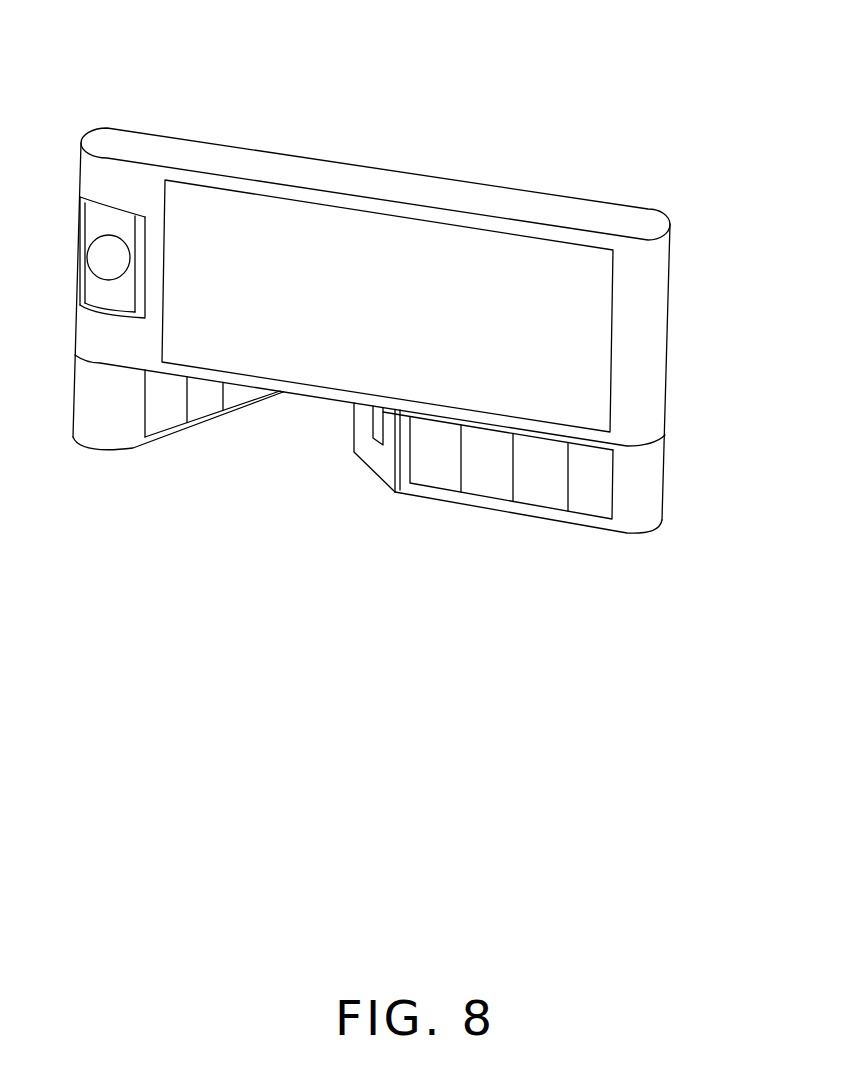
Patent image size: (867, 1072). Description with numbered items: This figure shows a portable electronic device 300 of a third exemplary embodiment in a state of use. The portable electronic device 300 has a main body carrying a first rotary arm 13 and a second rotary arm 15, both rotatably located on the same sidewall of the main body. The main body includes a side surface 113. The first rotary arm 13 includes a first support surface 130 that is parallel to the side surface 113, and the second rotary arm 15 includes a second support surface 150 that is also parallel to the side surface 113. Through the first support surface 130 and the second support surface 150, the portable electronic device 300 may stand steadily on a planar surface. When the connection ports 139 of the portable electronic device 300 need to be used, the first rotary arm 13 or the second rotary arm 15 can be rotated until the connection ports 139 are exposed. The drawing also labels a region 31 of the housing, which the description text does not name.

The portable electronic device 300 is at (422, 41).
The display housing 31 is at (638, 305).
The side surface 113 is at (300, 398).
The second rotary arm 15 is at (110, 422).
The second support surface 150 is at (202, 427).
The first rotary arm 13 is at (633, 482).
The connection ports 139 is at (378, 429).
The first support surface 130 is at (540, 518).